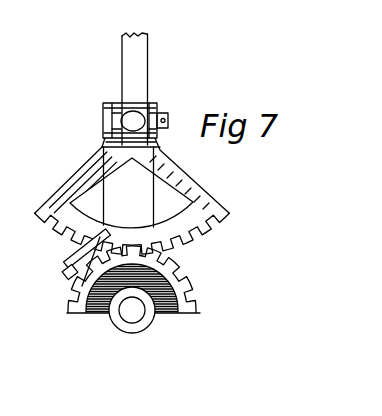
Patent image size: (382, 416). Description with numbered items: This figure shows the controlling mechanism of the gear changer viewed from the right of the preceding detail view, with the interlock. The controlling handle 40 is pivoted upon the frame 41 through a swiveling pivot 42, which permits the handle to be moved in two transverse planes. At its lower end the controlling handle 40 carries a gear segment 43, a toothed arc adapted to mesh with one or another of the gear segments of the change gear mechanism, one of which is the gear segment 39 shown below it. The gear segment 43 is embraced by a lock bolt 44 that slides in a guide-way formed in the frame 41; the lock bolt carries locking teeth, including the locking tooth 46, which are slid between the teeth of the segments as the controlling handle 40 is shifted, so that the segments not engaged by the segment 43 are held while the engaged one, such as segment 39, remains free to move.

The gear segment 39 is at (182, 307).
The controlling handle 40 is at (148, 80).
The frame 41 is at (146, 188).
The swiveling pivot 42 is at (103, 116).
The gear segment 43 is at (154, 229).
The lock bolt 44 is at (95, 240).
The locking tooth 46 is at (88, 258).